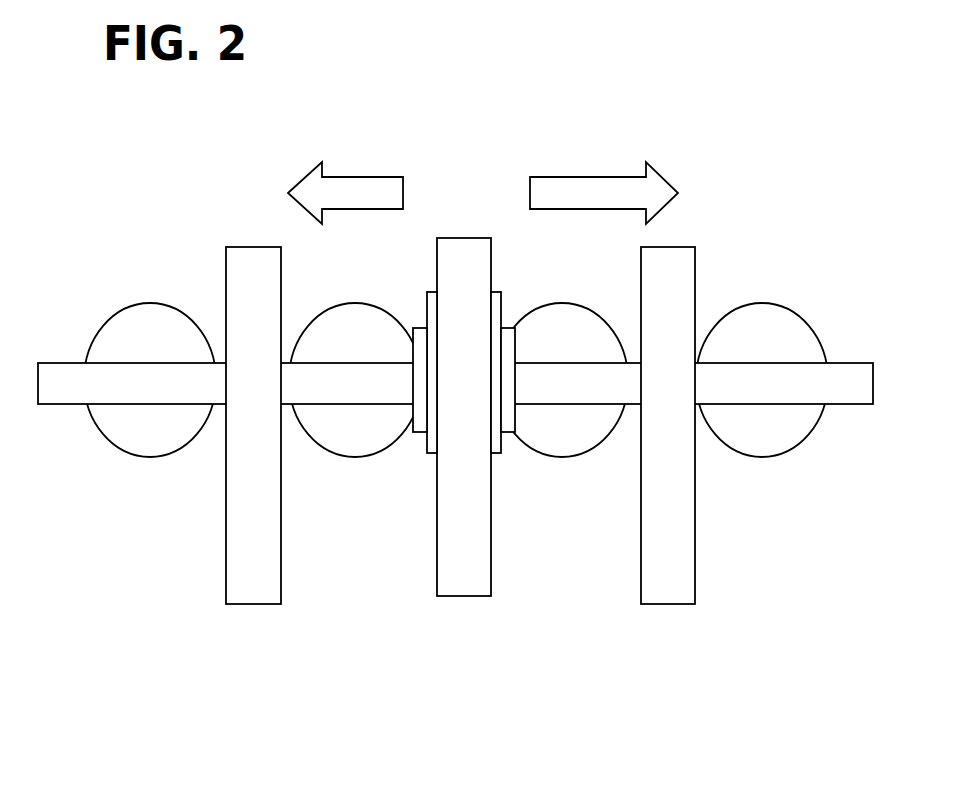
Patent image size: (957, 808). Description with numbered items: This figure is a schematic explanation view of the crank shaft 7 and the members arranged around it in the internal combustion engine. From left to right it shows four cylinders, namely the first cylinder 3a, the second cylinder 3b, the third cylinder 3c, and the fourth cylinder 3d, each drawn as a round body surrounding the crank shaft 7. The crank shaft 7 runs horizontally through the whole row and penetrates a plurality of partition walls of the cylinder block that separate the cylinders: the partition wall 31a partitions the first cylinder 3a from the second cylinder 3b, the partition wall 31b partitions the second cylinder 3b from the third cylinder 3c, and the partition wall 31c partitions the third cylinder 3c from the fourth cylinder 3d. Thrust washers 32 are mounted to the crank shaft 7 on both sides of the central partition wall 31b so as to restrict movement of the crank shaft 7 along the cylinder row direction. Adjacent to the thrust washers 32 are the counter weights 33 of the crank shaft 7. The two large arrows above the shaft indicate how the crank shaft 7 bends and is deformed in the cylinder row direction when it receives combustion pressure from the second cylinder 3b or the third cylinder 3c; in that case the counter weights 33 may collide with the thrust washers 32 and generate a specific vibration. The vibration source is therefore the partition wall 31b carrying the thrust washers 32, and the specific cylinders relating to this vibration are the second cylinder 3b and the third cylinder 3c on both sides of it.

The #1 cylinder 3a is at (152, 320).
The #2 cylinder 3b is at (357, 318).
The #3 cylinder 3c is at (562, 318).
The #4 cylinder 3d is at (765, 318).
The crank shaft 7 is at (850, 368).
The partition wall 31a is at (253, 585).
The partition wall 31b is at (460, 584).
The partition wall 31c is at (665, 585).
The thrust washers 32 is at (430, 453).
The counter weights 33 is at (421, 335).